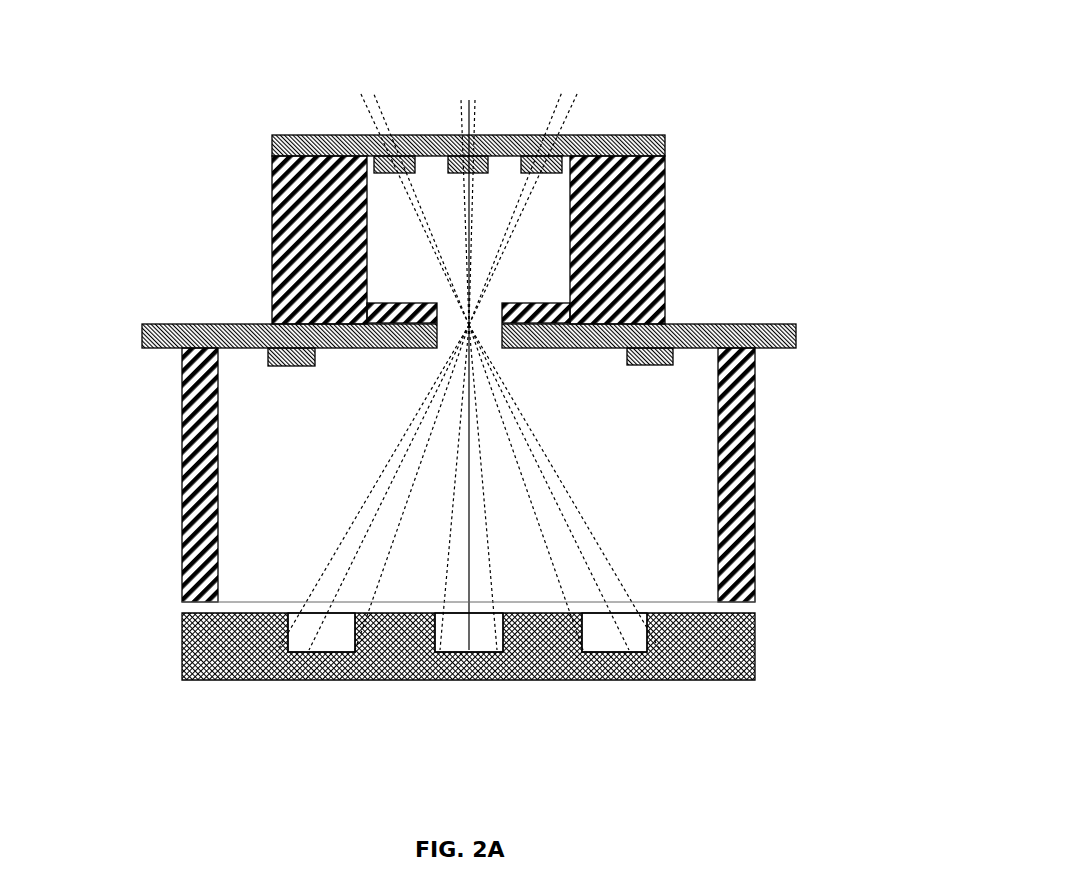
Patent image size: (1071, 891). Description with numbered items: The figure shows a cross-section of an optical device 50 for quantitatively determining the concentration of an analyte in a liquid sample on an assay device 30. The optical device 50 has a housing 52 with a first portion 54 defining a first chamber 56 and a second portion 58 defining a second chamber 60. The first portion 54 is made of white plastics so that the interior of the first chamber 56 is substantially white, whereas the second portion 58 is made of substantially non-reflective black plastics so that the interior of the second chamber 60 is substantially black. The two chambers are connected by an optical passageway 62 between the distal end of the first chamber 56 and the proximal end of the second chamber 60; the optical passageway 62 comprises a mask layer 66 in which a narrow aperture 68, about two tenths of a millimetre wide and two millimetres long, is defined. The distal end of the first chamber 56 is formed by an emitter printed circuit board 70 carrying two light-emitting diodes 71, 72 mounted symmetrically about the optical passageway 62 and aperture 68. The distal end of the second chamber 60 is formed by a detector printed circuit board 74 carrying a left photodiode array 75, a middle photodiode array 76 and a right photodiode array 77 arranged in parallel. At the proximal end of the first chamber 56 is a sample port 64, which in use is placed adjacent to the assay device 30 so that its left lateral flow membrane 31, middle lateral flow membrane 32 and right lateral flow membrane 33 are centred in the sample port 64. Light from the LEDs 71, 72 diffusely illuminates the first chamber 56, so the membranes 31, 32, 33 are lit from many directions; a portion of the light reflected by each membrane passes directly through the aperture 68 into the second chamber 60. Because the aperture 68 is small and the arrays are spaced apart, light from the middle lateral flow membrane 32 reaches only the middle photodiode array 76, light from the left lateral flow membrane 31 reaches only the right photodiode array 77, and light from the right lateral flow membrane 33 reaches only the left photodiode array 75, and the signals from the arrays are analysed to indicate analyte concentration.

The assay device 30 is at (777, 652).
The left lateral flow membrane 31 is at (318, 638).
The middle lateral flow membrane 32 is at (477, 640).
The right lateral flow membrane 33 is at (620, 640).
The optical device 50 is at (150, 115).
The housing 52 is at (827, 308).
The first portion 54 is at (755, 515).
The first chamber 56 is at (280, 433).
The second portion 58 is at (663, 195).
The second chamber 60 is at (392, 235).
The optical passageway 62 is at (445, 313).
The sample port 64 is at (253, 600).
The mask layer 66 is at (547, 320).
The aperture 68 is at (490, 308).
The emitter printed circuit board 70 is at (796, 340).
The light-emitting diode 71 is at (288, 357).
The light-emitting diode 72 is at (660, 357).
The detector printed circuit board 74 is at (608, 135).
The left photodiode array 75 is at (388, 165).
The middle photodiode array 76 is at (457, 165).
The right photodiode array 77 is at (540, 165).